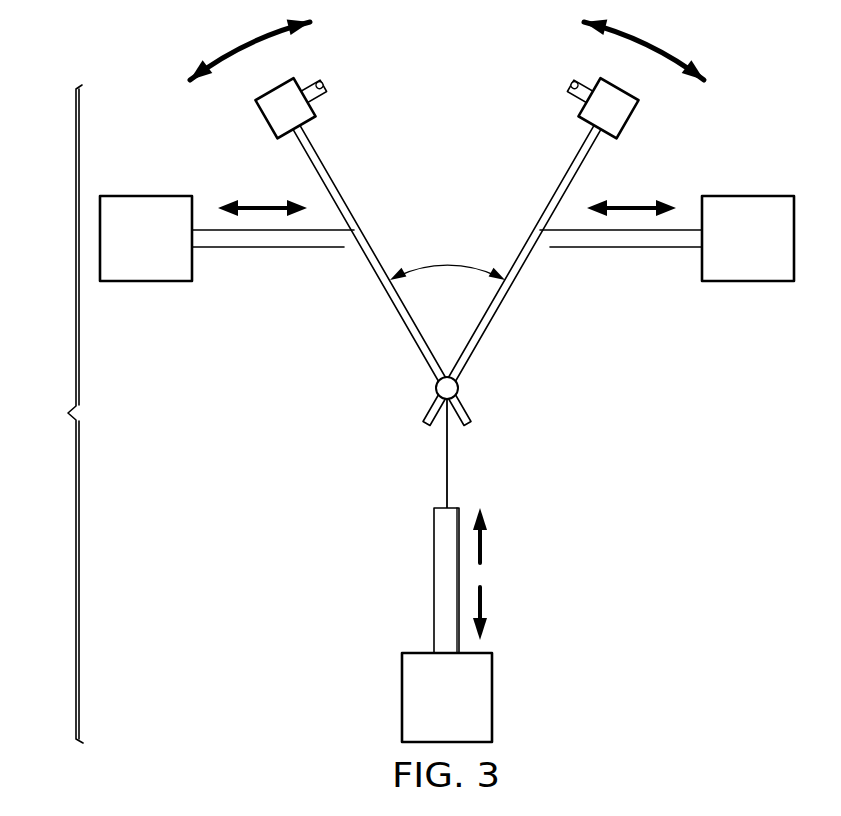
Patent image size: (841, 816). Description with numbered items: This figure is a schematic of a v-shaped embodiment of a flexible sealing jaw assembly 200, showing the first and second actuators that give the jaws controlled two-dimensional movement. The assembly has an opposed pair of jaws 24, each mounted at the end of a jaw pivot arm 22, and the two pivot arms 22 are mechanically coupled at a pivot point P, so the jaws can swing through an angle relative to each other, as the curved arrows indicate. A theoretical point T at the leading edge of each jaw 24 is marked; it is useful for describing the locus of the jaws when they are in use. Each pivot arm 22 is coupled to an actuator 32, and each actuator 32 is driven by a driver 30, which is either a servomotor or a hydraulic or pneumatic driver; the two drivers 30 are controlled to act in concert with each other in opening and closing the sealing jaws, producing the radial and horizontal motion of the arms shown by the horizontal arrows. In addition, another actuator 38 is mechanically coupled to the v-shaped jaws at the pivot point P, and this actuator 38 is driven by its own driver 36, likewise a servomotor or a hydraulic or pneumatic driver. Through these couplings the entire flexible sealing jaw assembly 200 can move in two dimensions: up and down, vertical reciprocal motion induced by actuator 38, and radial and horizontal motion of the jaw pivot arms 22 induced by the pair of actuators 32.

The flexible sealing jaw assembly 200 is at (52, 414).
The jaw pivot arm 22 is at (368, 266).
The jaw 24 is at (262, 123).
The driver 30 is at (148, 196).
The actuator 32 is at (264, 249).
The driver 36 is at (493, 696).
The actuator 38 is at (434, 578).
The pivot point P is at (466, 396).
The theoretical point T is at (306, 73).